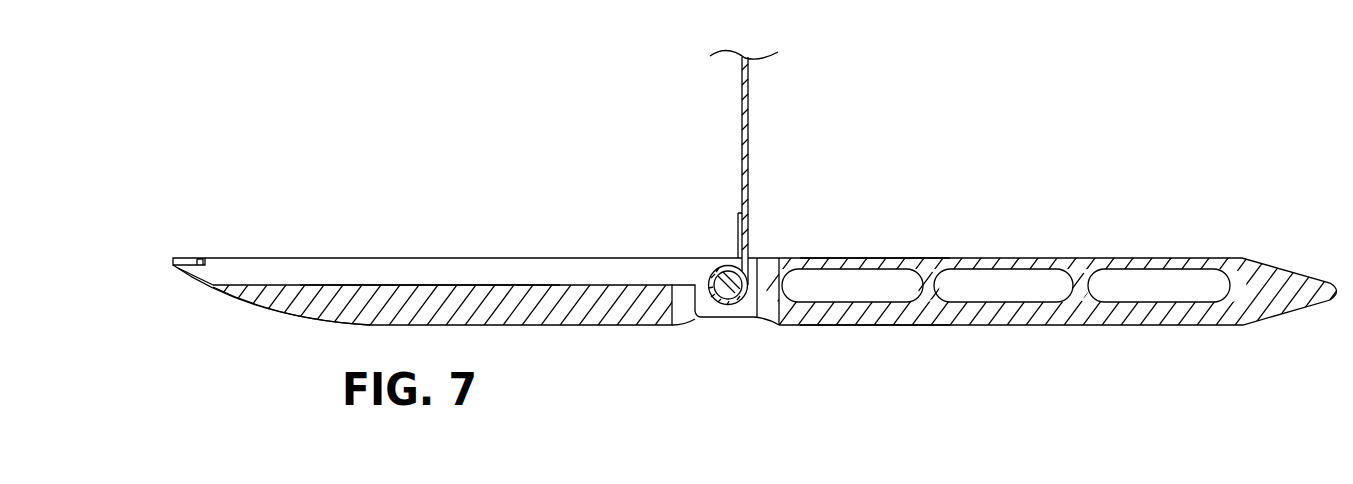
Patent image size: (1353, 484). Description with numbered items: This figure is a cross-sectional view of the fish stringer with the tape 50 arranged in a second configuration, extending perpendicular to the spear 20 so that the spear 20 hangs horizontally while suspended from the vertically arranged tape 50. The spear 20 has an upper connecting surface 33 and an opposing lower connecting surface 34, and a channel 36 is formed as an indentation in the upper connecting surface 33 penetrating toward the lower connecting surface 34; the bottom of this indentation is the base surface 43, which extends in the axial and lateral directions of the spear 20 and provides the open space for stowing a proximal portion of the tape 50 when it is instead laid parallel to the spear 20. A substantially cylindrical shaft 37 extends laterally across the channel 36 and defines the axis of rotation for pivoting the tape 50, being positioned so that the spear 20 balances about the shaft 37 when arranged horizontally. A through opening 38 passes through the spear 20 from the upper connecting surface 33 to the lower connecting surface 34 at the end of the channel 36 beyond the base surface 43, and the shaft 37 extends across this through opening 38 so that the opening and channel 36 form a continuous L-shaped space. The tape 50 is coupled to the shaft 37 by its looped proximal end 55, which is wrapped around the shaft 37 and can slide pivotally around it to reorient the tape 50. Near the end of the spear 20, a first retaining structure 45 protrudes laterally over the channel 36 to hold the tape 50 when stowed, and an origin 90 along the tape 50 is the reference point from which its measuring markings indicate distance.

The spear 20 is at (972, 257).
The upper connecting surface 33 is at (872, 257).
The lower connecting surface 34 is at (868, 327).
The channel 36 is at (510, 283).
The shaft 37 is at (727, 287).
The through opening 38 is at (767, 294).
The base surface 43 is at (430, 284).
The first retaining structure 45 is at (186, 257).
The tape 50 is at (742, 140).
The looped proximal end 55 is at (757, 287).
The origin 90 is at (752, 262).